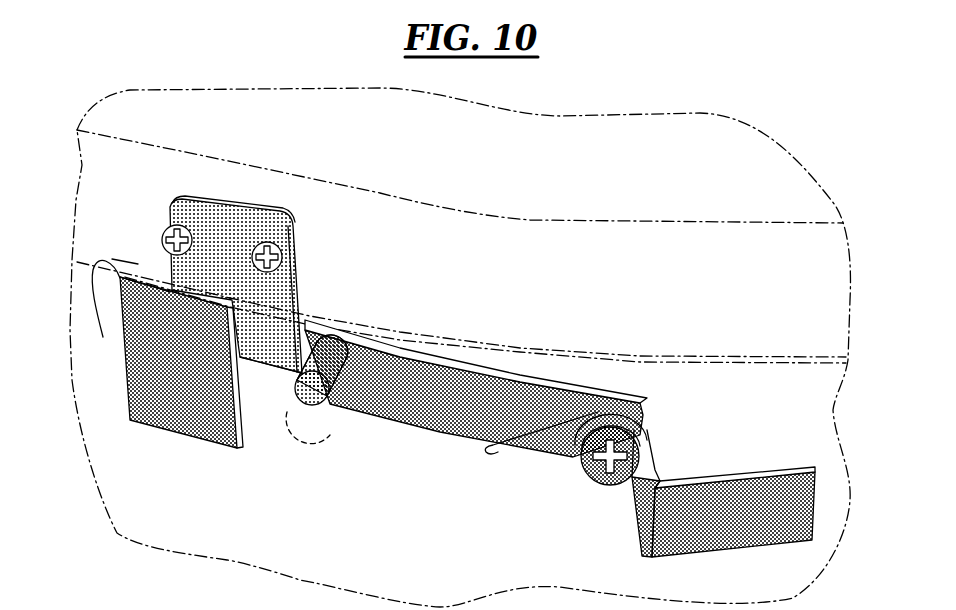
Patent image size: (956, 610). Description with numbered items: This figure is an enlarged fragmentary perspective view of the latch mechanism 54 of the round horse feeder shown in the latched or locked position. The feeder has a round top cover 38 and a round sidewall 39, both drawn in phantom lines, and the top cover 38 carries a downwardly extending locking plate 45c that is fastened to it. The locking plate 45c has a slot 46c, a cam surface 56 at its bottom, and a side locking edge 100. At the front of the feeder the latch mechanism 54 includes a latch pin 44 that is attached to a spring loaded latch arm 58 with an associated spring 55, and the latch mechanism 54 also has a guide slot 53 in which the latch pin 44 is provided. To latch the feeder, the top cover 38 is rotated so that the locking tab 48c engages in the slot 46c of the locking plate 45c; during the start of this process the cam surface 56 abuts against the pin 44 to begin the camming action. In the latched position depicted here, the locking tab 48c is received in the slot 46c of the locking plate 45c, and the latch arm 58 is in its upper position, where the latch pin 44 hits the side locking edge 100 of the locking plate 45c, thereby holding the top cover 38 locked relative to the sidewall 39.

The top cover 38 is at (240, 88).
The sidewall 39 is at (115, 532).
The latch pin 44 is at (312, 403).
The locking plate 45c is at (239, 274).
The slot 46c is at (138, 263).
The locking tab 48c is at (103, 337).
The guide slot 53 is at (290, 432).
The latch mechanism 54 is at (440, 478).
The spring 55 is at (541, 446).
The cam surface 56 is at (268, 362).
The latch arm 58 is at (482, 393).
The side locking edge 100 is at (299, 298).